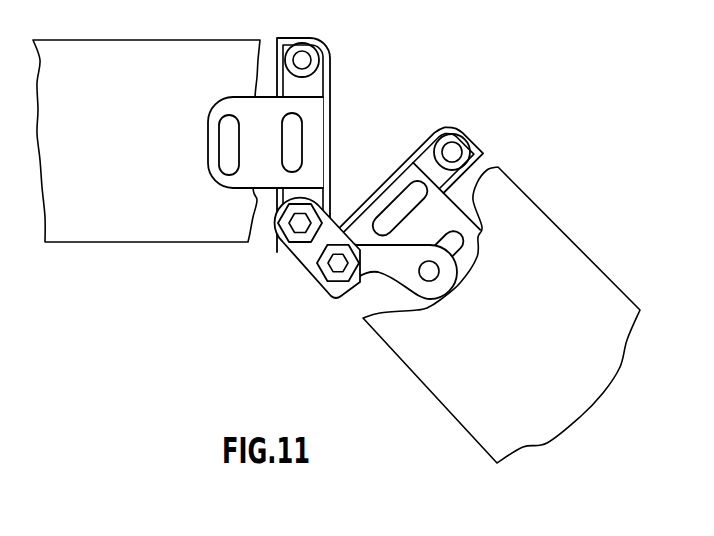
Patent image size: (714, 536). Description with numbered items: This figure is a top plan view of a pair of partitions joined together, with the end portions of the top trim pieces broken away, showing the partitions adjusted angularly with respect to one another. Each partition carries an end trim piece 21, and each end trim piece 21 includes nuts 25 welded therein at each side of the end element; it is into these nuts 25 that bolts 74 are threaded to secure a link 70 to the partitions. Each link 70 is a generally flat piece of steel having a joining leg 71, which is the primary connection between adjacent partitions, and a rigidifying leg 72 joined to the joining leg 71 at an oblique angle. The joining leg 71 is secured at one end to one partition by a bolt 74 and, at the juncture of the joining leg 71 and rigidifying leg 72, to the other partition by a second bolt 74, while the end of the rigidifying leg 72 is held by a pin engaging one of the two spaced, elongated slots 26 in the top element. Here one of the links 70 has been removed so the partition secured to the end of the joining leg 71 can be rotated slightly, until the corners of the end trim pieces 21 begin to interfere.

The end trim piece 21 is at (331, 131).
The nut 25 is at (315, 55).
The slot 26 is at (230, 133).
The link 70 is at (342, 248).
The joining leg 71 is at (328, 223).
The rigidifying leg 72 is at (392, 267).
The bolt 74 is at (292, 226).